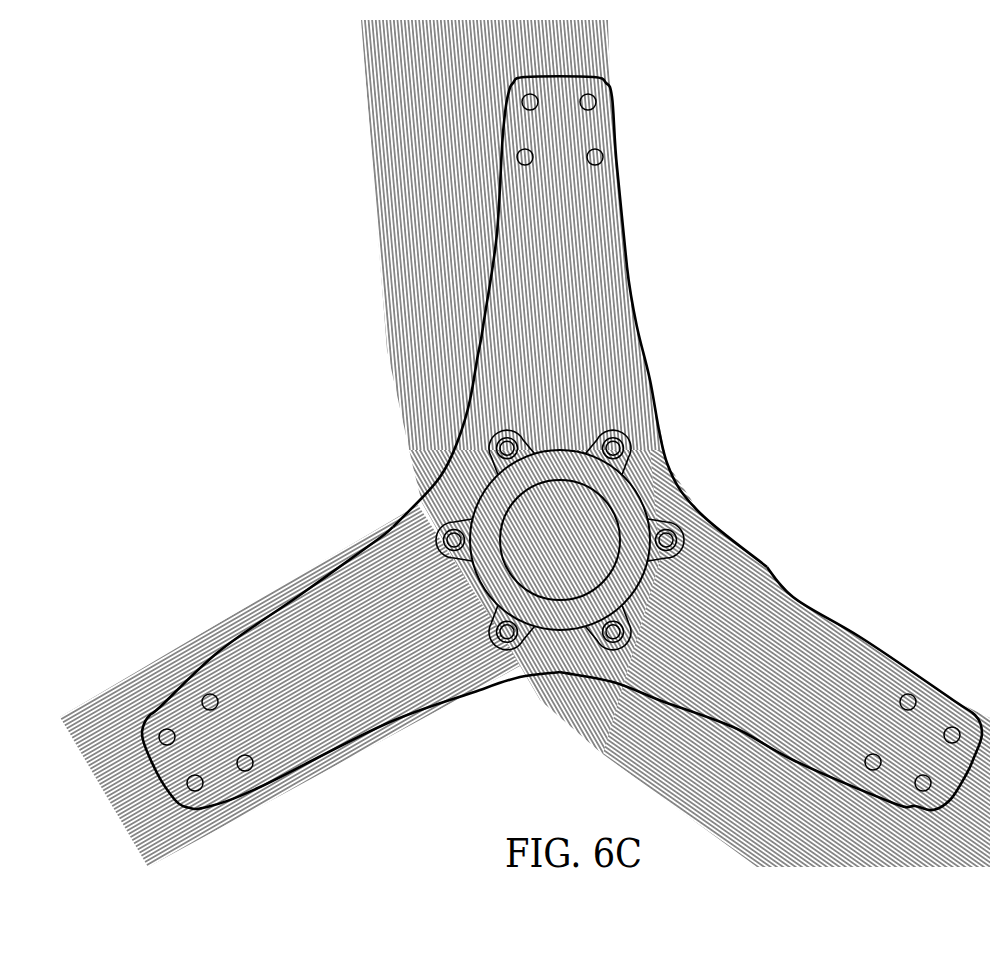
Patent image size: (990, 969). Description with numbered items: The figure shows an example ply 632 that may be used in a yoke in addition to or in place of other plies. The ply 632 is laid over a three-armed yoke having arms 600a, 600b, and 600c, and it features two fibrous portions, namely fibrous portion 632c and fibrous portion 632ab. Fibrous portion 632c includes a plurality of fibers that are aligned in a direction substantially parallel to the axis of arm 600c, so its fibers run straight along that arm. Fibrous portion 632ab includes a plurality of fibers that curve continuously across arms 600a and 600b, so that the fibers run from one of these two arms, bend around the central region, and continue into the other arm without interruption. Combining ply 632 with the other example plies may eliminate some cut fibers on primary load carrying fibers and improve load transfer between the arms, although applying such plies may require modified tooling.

The ply 632 is at (495, 450).
The fibrous portion 632ab is at (398, 331).
The fibrous portion 632c is at (153, 669).
The arm 600a is at (873, 620).
The arm 600b is at (646, 202).
The arm 600c is at (206, 598).